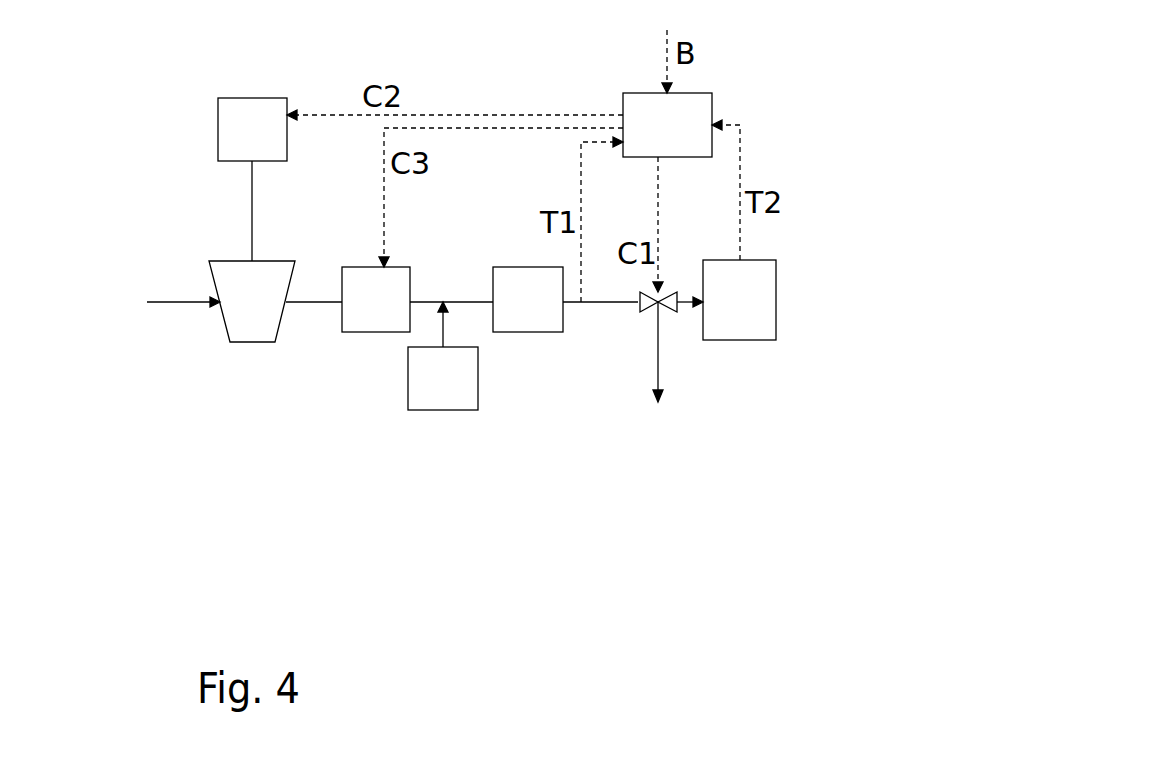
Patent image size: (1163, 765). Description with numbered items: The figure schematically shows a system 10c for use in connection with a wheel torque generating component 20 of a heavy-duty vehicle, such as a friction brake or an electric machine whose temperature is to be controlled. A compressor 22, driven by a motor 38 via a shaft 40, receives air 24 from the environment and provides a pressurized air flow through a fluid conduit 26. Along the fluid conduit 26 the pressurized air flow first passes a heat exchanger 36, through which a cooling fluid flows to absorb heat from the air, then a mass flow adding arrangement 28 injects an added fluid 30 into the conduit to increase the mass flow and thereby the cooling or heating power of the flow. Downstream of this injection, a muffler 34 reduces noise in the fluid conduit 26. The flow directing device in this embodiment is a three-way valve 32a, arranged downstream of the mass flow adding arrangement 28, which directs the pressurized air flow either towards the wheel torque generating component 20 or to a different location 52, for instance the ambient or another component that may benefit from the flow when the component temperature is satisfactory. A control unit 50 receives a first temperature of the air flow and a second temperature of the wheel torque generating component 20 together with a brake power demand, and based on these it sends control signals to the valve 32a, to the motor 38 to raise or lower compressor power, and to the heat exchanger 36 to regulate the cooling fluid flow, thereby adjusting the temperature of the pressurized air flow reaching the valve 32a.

The system 10c is at (946, 50).
The wheel torque generating component 20 is at (778, 283).
The compressor 22 is at (244, 345).
The air 24 is at (180, 300).
The fluid conduit 26 is at (314, 304).
The mass flow adding arrangement 28 is at (438, 412).
The added fluid 30 is at (446, 322).
The valve 32a is at (671, 312).
The muffler 34 is at (500, 265).
The heat exchanger 36 is at (372, 266).
The motor 38 is at (218, 122).
The shaft 40 is at (250, 178).
The control unit 50 is at (712, 98).
The different location 52 is at (656, 381).